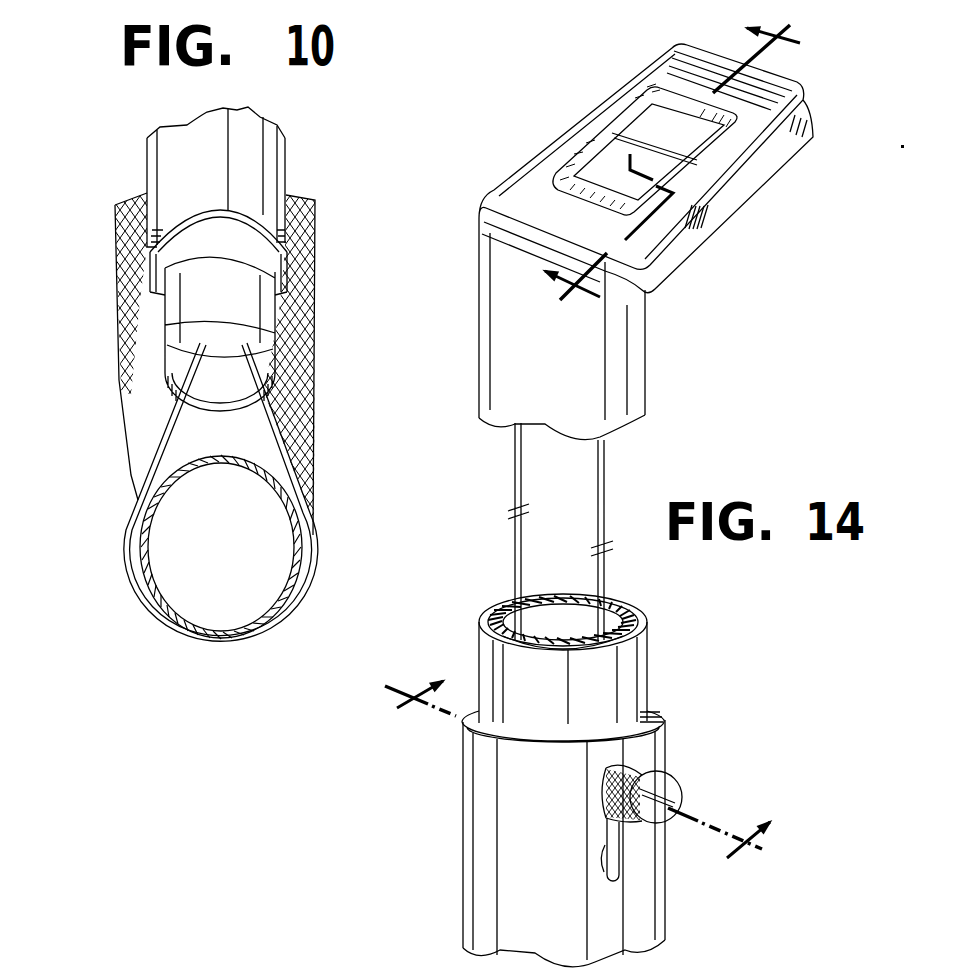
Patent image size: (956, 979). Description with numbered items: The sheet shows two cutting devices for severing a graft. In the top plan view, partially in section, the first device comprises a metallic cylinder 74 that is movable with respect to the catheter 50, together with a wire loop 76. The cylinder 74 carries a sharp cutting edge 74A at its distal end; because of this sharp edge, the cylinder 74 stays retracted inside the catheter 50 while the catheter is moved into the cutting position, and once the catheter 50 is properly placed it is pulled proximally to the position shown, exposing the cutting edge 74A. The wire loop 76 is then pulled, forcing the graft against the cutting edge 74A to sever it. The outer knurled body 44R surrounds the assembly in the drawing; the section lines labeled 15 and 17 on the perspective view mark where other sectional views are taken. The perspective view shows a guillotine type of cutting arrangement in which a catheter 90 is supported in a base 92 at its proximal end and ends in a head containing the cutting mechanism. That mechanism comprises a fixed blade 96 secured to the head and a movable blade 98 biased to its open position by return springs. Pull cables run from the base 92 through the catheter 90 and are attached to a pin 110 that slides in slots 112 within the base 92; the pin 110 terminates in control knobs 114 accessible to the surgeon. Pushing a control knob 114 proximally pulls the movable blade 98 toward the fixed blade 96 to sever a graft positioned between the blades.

In FIG. 10, the catheter 50 is at (155, 142).
In FIG. 10, the knurled housing body 44R is at (136, 273).
In FIG. 10, the metallic cylinder 74 is at (258, 310).
In FIG. 10, the cutting edge 74A is at (170, 350).
In FIG. 10, the wire loop 76 is at (152, 614).
In FIG. 14, the fixed blade 96 is at (650, 120).
In FIG. 14, the movable blade 98 is at (561, 177).
In FIG. 14, the section line 15- 15 is at (687, 171).
In FIG. 14, the catheter 90 is at (630, 690).
In FIG. 14, the base 92 is at (473, 866).
In FIG. 14, the pin 110 is at (600, 784).
In FIG. 14, the control knob 114 is at (638, 775).
In FIG. 14, the slot 112 is at (607, 856).
In FIG. 14, the section line 17- 17 is at (566, 785).